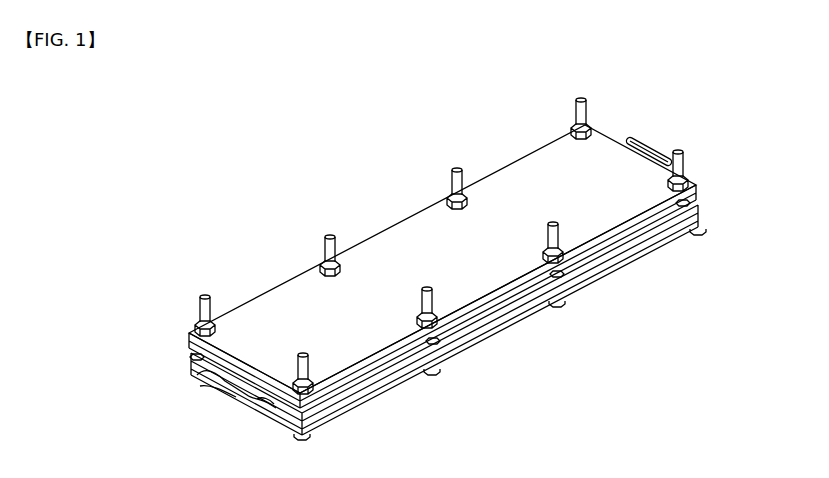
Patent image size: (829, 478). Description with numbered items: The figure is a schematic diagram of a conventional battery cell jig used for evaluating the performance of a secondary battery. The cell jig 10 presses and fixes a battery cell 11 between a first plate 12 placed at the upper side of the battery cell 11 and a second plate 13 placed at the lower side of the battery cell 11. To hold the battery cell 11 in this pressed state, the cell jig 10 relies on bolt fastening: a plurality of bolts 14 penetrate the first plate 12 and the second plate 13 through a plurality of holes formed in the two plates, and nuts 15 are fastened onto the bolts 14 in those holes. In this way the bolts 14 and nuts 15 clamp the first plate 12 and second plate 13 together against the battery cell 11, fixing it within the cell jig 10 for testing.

The cell jig 10 is at (182, 124).
The battery cell 11 is at (203, 381).
The first plate 12 is at (697, 185).
The second plate 13 is at (697, 218).
The bolt 14 is at (323, 253).
The nut 15 is at (191, 332).